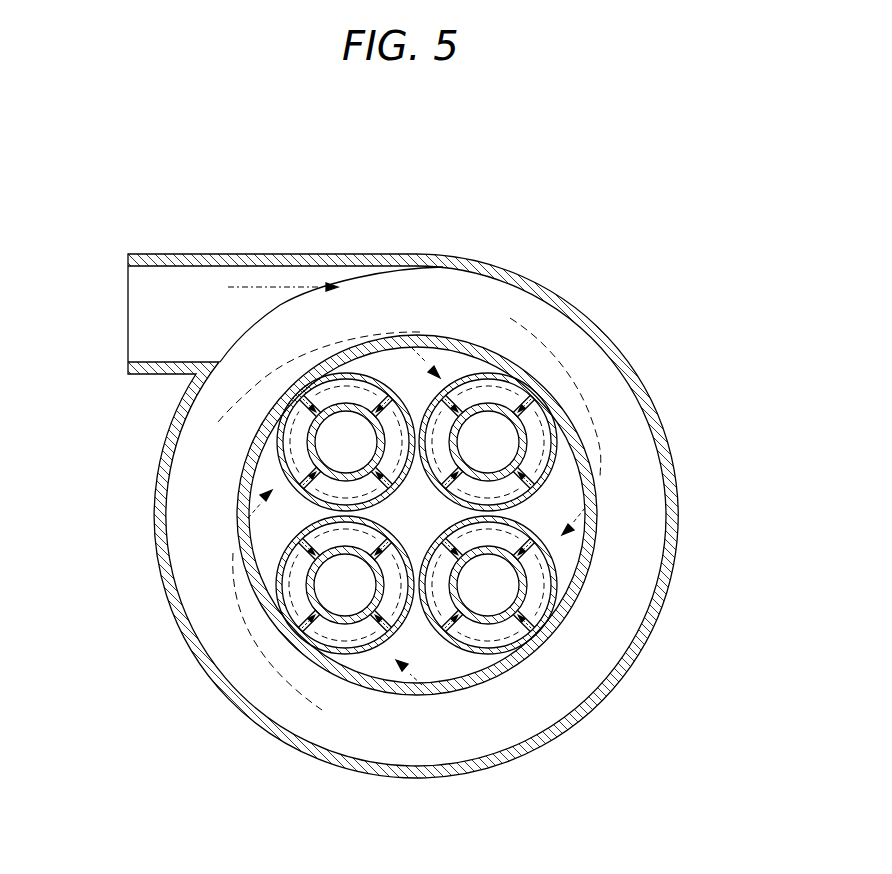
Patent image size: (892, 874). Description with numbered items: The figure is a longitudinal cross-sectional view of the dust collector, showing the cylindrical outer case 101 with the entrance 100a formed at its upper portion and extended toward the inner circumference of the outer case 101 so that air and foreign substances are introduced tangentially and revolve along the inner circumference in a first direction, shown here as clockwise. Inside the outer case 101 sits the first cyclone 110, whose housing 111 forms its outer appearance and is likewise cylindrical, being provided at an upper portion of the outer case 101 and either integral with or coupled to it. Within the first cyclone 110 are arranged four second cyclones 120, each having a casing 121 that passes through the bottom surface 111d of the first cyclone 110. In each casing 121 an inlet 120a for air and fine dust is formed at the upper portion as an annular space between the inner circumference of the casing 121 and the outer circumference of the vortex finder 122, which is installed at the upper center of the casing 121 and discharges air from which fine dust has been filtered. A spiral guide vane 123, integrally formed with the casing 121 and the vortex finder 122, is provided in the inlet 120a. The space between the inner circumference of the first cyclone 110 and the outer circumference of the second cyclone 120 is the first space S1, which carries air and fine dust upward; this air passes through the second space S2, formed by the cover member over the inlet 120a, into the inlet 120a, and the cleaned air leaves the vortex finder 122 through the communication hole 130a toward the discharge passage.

The entrance 100a is at (140, 322).
The outer case 101 is at (652, 400).
The first cyclone 110 is at (485, 515).
The housing 111 is at (590, 540).
The bottom surface 111d is at (382, 665).
The second cyclone 120 is at (352, 564).
The inlet 120a is at (300, 572).
The casing 121 is at (318, 648).
The vortex finder 122 is at (290, 615).
The guide vane 123 is at (297, 597).
The communication hole 130a is at (500, 592).
The first space S1 is at (437, 663).
The second space S2 is at (500, 642).